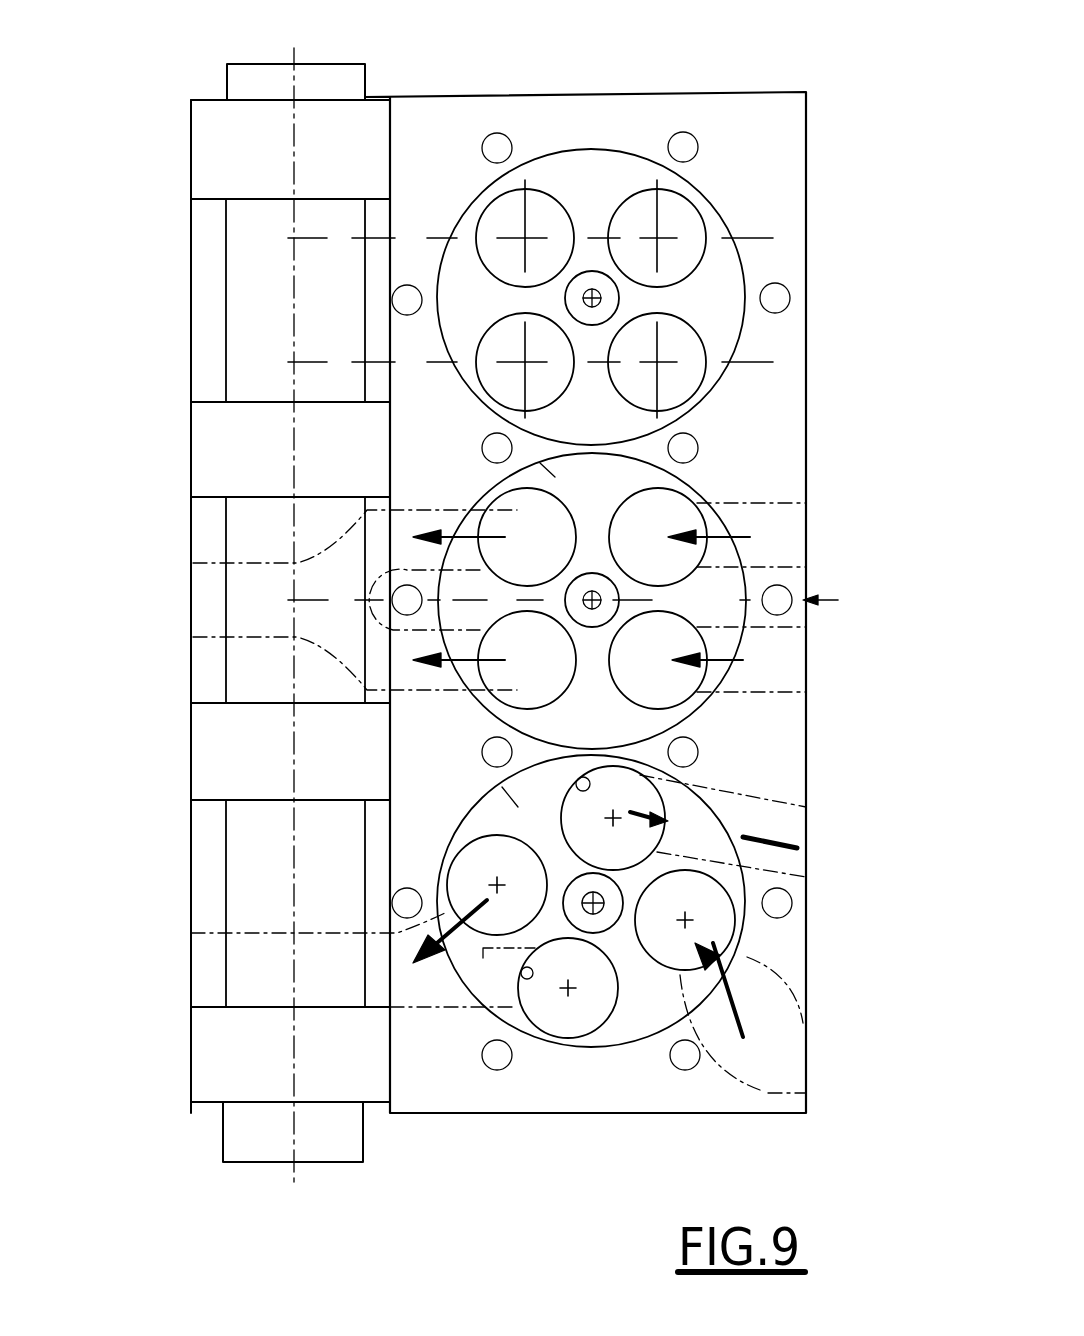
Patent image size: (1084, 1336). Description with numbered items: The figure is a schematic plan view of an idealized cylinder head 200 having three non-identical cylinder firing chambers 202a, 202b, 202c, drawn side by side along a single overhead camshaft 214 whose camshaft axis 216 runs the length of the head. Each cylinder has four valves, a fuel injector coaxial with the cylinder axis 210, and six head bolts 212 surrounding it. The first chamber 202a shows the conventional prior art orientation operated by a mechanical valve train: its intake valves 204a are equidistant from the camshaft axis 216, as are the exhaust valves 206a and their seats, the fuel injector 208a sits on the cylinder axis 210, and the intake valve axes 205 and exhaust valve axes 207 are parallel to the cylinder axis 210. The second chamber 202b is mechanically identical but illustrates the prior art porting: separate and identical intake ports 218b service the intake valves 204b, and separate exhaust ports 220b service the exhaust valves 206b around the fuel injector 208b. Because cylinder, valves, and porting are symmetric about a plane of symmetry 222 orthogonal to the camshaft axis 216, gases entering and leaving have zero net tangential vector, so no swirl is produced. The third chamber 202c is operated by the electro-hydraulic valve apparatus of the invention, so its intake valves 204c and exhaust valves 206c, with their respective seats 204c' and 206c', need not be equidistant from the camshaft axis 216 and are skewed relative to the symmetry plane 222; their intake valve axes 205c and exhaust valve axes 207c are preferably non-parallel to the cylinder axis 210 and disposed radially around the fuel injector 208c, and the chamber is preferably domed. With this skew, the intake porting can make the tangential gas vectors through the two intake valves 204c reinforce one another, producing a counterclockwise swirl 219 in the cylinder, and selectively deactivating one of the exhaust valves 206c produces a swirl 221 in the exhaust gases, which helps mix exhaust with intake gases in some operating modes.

The cylinder head 200 is at (840, 8).
The cylinder firing chamber 202a is at (588, 182).
The cylinder firing chamber 202b is at (490, 480).
The cylinder firing chamber 202c is at (490, 787).
The intake valves 204a is at (670, 203).
The intake valves 204b is at (683, 513).
The intake valves 204c is at (672, 926).
The intake valve seats 204c' is at (573, 898).
The intake valve axes 205 is at (665, 235).
The intake valve axes 205c is at (613, 818).
The exhaust valves 206a is at (490, 220).
The exhaust valves 206b is at (470, 538).
The exhaust valves 206c is at (498, 958).
The exhaust valve seats 206c' is at (492, 924).
The exhaust valve axes 207 is at (515, 242).
The exhaust valve axes 207c is at (530, 860).
The fuel injector 208a is at (623, 297).
The fuel injector 208b is at (630, 600).
The fuel injector 208c is at (620, 884).
The cylinder axis 210 is at (565, 297).
The head bolts 212 is at (495, 145).
The overhead camshaft 214 is at (223, 526).
The camshaft axis 216 is at (293, 316).
The intake ports 218b is at (770, 538).
The swirl 219 is at (743, 837).
The exhaust ports 220b is at (408, 540).
The swirl 221 is at (352, 953).
The plane of symmetry 222 is at (318, 597).